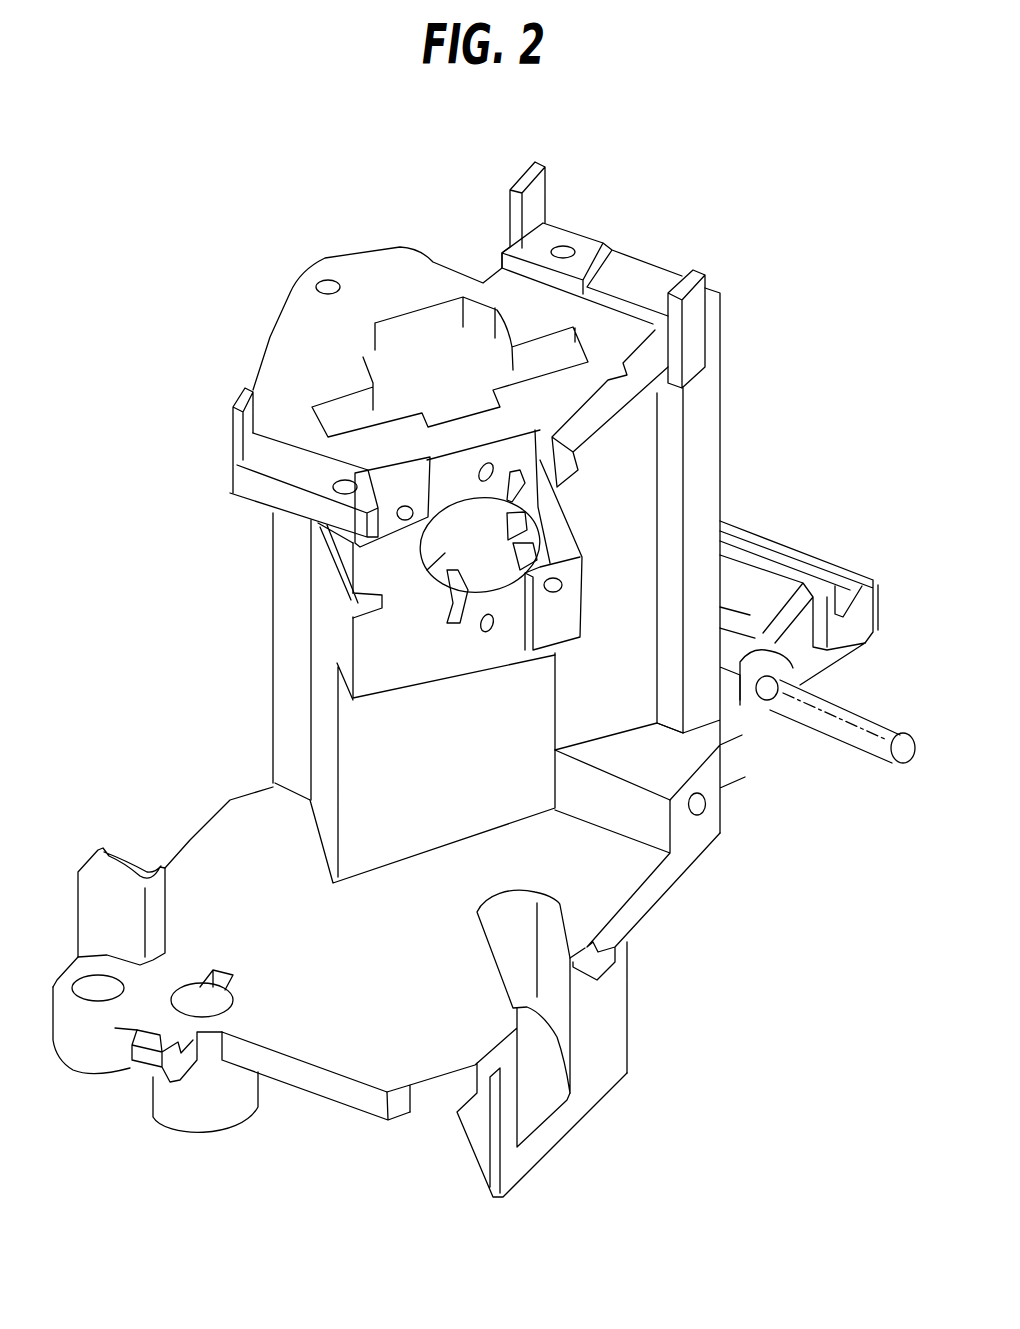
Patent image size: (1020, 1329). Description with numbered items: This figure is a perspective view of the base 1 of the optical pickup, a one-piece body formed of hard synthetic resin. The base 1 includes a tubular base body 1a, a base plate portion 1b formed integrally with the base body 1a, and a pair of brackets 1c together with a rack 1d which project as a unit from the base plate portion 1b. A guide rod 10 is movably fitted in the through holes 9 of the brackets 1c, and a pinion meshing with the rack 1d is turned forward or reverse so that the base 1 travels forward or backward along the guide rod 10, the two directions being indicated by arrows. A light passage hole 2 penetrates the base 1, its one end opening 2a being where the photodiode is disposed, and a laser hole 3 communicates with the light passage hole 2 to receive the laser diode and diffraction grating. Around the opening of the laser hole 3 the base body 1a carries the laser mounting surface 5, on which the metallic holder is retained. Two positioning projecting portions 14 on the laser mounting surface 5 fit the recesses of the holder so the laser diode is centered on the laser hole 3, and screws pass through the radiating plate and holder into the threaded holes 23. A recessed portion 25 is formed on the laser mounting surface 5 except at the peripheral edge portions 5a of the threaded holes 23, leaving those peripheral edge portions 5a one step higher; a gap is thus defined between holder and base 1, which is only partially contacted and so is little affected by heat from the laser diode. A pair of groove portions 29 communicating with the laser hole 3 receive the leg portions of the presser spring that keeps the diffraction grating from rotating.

The base 1 is at (272, 605).
The base body 1a is at (297, 657).
The base plate portion 1b is at (230, 830).
The brackets 1c is at (737, 655).
The rack 1d is at (812, 550).
The light passage hole 2 is at (402, 370).
The one end opening 2a is at (427, 330).
The laser hole 3 is at (443, 553).
The laser mounting surface 5 is at (408, 690).
The peripheral edge portions 5a is at (393, 530).
The through holes 9 is at (763, 703).
The guide rod 10 is at (887, 732).
The positioning projecting portions 14 is at (478, 478).
The threaded holes 23 is at (405, 507).
The recessed portion 25 is at (508, 455).
The groove portions 29 is at (518, 480).